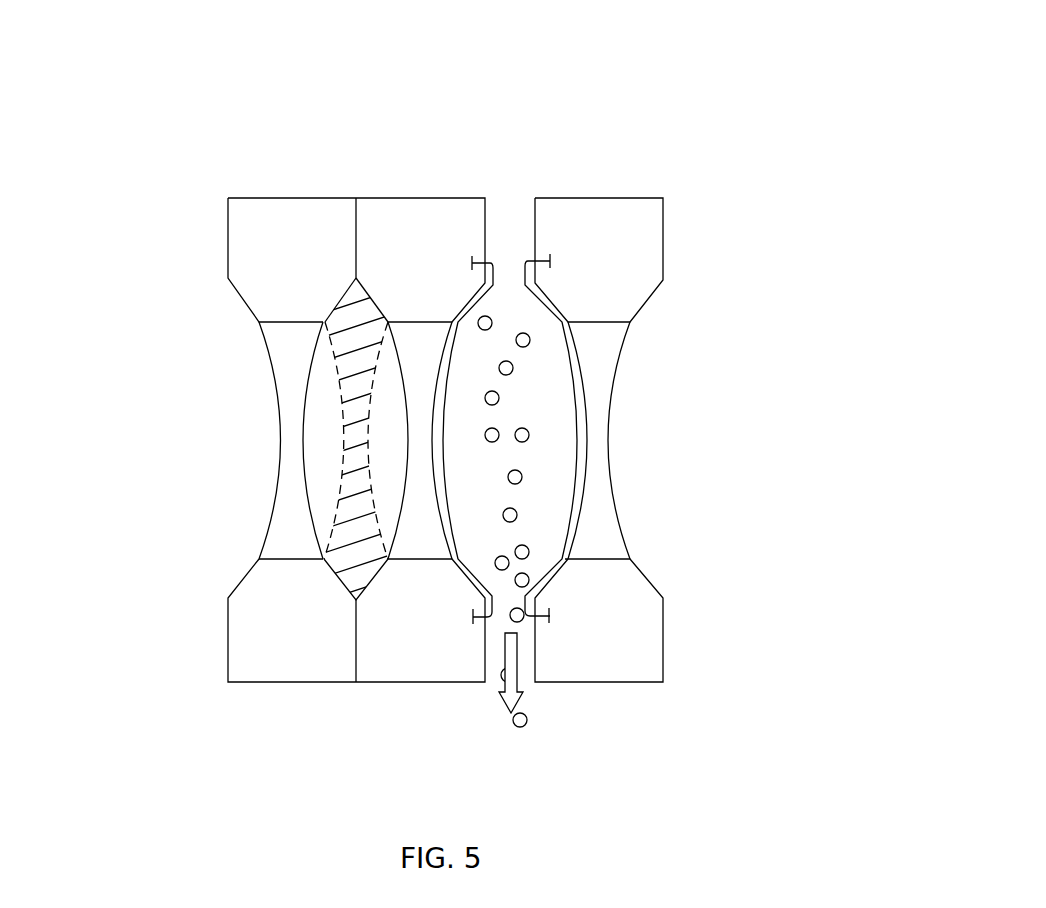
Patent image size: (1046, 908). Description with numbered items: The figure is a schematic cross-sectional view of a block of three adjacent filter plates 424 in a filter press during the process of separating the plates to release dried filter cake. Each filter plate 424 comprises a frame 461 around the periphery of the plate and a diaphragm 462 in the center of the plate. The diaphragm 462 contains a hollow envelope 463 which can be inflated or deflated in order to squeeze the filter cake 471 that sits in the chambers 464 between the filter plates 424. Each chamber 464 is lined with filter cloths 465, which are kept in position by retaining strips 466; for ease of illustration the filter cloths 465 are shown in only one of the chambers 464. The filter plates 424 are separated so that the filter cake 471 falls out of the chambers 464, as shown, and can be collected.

The filter plate 424 is at (655, 177).
The frame 461 is at (255, 300).
The diaphragm 462 is at (277, 500).
The hollow envelope 463 is at (287, 515).
The chamber 464 is at (322, 414).
The filter cloth 465 is at (568, 364).
The retaining strip 466 is at (551, 261).
The filter cake 471 is at (373, 326).